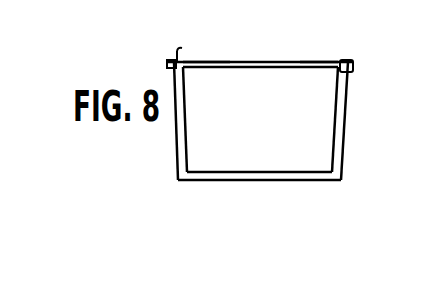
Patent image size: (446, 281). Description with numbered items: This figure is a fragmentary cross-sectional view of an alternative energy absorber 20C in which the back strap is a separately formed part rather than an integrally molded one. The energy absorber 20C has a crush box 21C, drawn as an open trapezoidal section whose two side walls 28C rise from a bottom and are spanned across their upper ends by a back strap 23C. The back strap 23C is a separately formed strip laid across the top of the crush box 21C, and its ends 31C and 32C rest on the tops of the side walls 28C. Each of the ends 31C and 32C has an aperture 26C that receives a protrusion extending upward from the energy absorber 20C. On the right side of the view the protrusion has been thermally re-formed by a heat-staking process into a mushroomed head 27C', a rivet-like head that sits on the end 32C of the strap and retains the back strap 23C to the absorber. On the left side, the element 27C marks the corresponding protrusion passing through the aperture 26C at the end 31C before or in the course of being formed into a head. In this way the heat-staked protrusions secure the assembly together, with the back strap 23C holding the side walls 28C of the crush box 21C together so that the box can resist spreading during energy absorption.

The energy absorber 20C is at (259, 98).
The crush box 21C is at (359, 134).
The back strap 23C is at (287, 57).
The aperture 26C is at (168, 63).
The pin 27C is at (179, 39).
The mushroomed head 27C' is at (369, 68).
The side wall 28C is at (173, 131).
The end of back strap 31C is at (193, 61).
The end of back strap 32C is at (325, 61).